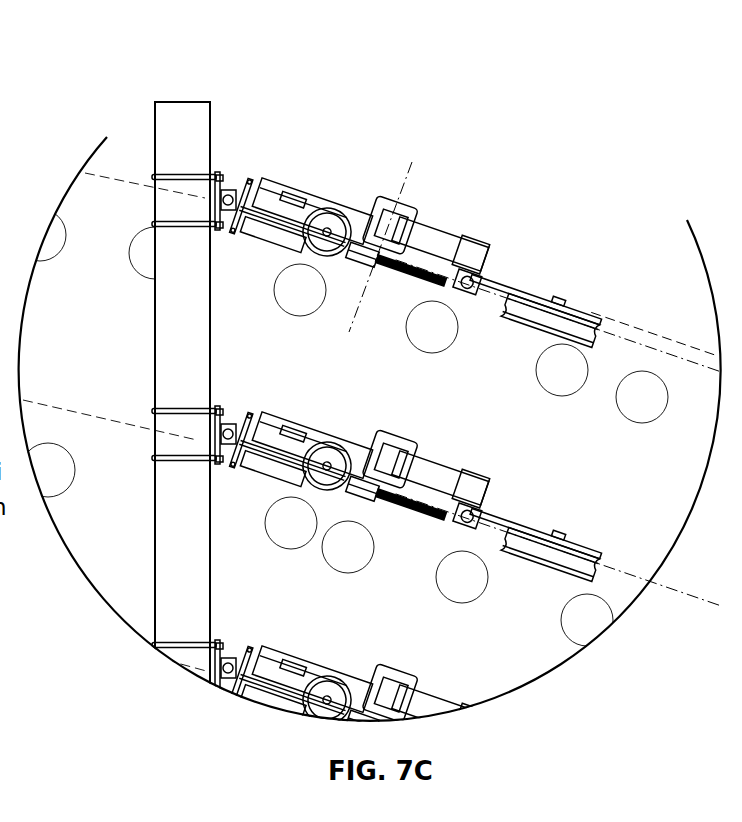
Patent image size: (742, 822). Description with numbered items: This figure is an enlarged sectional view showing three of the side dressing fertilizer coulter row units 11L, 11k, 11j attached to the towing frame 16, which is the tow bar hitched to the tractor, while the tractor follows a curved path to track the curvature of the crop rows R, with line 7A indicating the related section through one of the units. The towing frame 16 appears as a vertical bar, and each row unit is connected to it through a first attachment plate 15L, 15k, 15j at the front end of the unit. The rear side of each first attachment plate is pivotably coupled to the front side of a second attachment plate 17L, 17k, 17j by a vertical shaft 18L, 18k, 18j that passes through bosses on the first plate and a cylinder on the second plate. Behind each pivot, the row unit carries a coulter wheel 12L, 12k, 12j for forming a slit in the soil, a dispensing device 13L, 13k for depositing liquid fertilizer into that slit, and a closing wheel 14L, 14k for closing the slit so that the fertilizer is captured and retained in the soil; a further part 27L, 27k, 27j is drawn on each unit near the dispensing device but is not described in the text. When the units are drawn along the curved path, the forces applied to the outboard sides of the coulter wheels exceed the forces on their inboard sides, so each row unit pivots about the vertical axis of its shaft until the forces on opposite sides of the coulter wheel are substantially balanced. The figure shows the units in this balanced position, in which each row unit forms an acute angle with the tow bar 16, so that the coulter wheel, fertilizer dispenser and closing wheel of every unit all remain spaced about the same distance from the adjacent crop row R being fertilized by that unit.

The towing frame 16 is at (173, 117).
The line 7A is at (413, 160).
The crop row R is at (667, 435).
The side dressing fertilizer coulter row unit 11L is at (510, 250).
The coulter wheel 12L is at (397, 289).
The dispensing device 13L is at (472, 304).
The closing wheel 14L is at (536, 342).
The collar 27L is at (462, 260).
The first attachment plate 15L is at (216, 176).
The second attachment plate 17L is at (248, 184).
The vertical shaft 18L is at (233, 190).
The side dressing fertilizer coulter row unit 11k is at (512, 481).
The coulter wheel 12k is at (398, 523).
The dispensing device 13k is at (472, 539).
The closing wheel 14k is at (535, 575).
The collar 27k is at (462, 492).
The first attachment plate 15k is at (216, 410).
The second attachment plate 17k is at (248, 418).
The vertical shaft 18k is at (233, 424).
The side dressing fertilizer coulter row unit 11j is at (450, 685).
The coulter wheel 12j is at (397, 734).
The collar 27j is at (471, 722).
The first attachment plate 15j is at (216, 644).
The second attachment plate 17j is at (248, 652).
The vertical shaft 18j is at (233, 658).